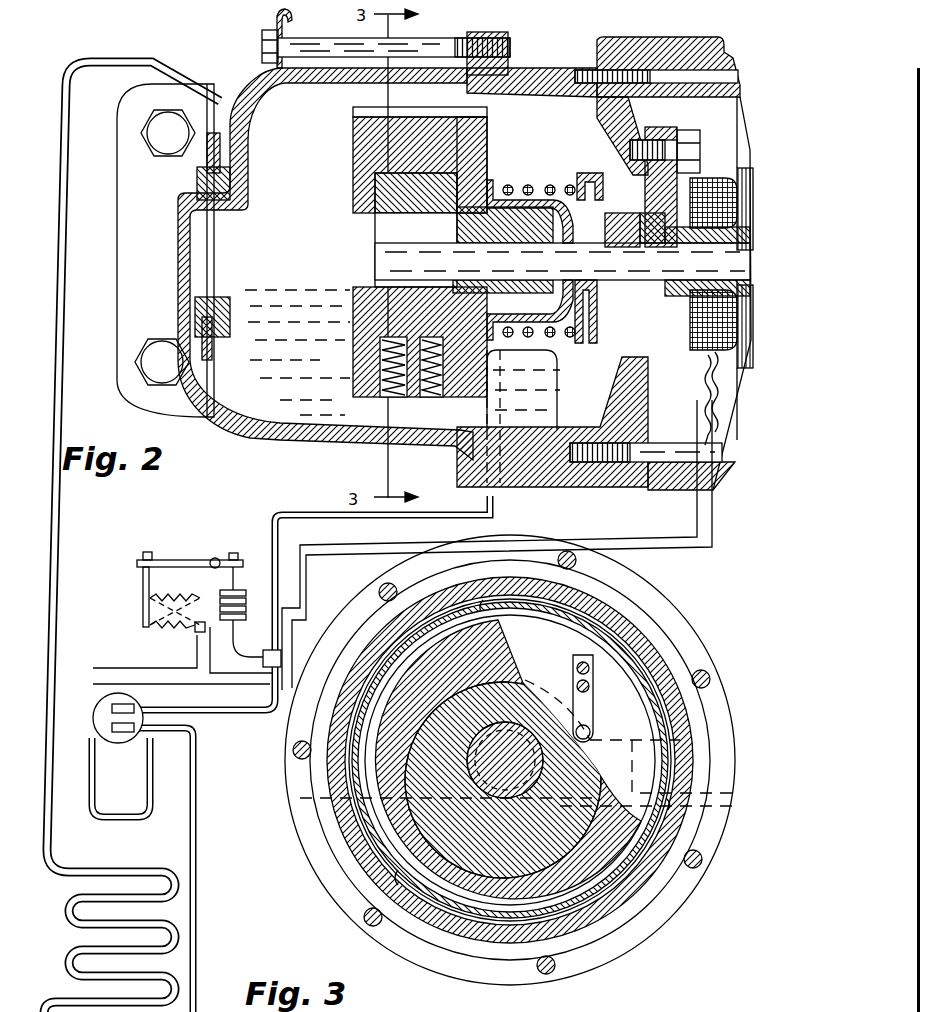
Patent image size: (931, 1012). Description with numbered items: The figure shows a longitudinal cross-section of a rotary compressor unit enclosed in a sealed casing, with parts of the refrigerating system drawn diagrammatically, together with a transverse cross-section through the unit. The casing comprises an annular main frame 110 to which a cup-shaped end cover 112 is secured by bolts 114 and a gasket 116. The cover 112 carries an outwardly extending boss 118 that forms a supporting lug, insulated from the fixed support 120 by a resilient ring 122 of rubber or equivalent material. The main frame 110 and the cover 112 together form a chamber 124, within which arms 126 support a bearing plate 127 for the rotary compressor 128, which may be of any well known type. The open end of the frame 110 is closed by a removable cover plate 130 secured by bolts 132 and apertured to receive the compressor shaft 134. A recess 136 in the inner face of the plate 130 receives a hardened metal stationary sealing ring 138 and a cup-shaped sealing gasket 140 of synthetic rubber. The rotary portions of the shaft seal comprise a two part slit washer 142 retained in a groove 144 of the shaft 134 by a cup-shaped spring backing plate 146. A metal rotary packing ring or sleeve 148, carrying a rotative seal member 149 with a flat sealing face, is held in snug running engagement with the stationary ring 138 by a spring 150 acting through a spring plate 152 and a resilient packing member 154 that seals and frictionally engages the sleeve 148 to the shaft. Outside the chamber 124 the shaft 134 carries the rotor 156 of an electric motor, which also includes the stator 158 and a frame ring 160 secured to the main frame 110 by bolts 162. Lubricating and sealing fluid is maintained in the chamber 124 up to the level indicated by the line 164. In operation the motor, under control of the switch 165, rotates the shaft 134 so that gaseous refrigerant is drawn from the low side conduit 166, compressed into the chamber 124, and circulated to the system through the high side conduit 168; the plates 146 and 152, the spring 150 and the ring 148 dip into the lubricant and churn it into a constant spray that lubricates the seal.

In FIG. 2, the main frame 110 is at (537, 78).
In FIG. 3, the main frame 110 is at (736, 911).
In FIG. 2, the cup-shaped end cover 112 is at (278, 431).
In FIG. 3, the cup-shaped end cover 112 is at (690, 750).
In FIG. 2, the bolts 114 is at (340, 28).
In FIG. 3, the bolts 114 is at (711, 680).
In FIG. 2, the gasket 116 is at (473, 88).
In FIG. 2, the boss 118 is at (207, 265).
In FIG. 2, the fixed support 120 is at (210, 153).
In FIG. 2, the resilient ring 122 is at (200, 181).
In FIG. 2, the chamber 124 is at (200, 284).
In FIG. 3, the chamber 124 is at (627, 650).
In FIG. 3, the arms 126 is at (481, 606).
In FIG. 2, the bearing plate 127 is at (473, 141).
In FIG. 2, the rotary compressor 128 is at (358, 230).
In FIG. 3, the rotary compressor 128 is at (463, 813).
In FIG. 2, the removable cover plate 130 is at (662, 132).
In FIG. 3, the removable cover plate 130 is at (312, 805).
In FIG. 2, the bolts 132 is at (687, 150).
In FIG. 2, the compressor shaft 134 is at (737, 270).
In FIG. 2, the recess 136 is at (655, 217).
In FIG. 2, the stationary sealing ring 138 is at (682, 233).
In FIG. 2, the cup-shaped sealing gasket 140 is at (678, 290).
In FIG. 2, the two part slit washer 142 is at (517, 330).
In FIG. 2, the groove 144 is at (545, 215).
In FIG. 2, the cup-shaped spring backing plate 146 is at (495, 180).
In FIG. 2, the rotary packing ring 148 is at (688, 317).
In FIG. 2, the rotative seal member 149 is at (640, 313).
In FIG. 2, the spring 150 is at (493, 340).
In FIG. 2, the spring plate 152 is at (593, 200).
In FIG. 2, the resilient packing member 154 is at (640, 222).
In FIG. 2, the rotor 156 is at (720, 343).
In FIG. 2, the stator 158 is at (738, 378).
In FIG. 2, the frame ring 160 is at (662, 485).
In FIG. 2, the bolts 162 is at (680, 433).
In FIG. 2, the level line 164 is at (280, 282).
In FIG. 2, the switch 165 is at (143, 607).
In FIG. 2, the low side conduit 166 is at (494, 506).
In FIG. 2, the high side conduit 168 is at (107, 60).